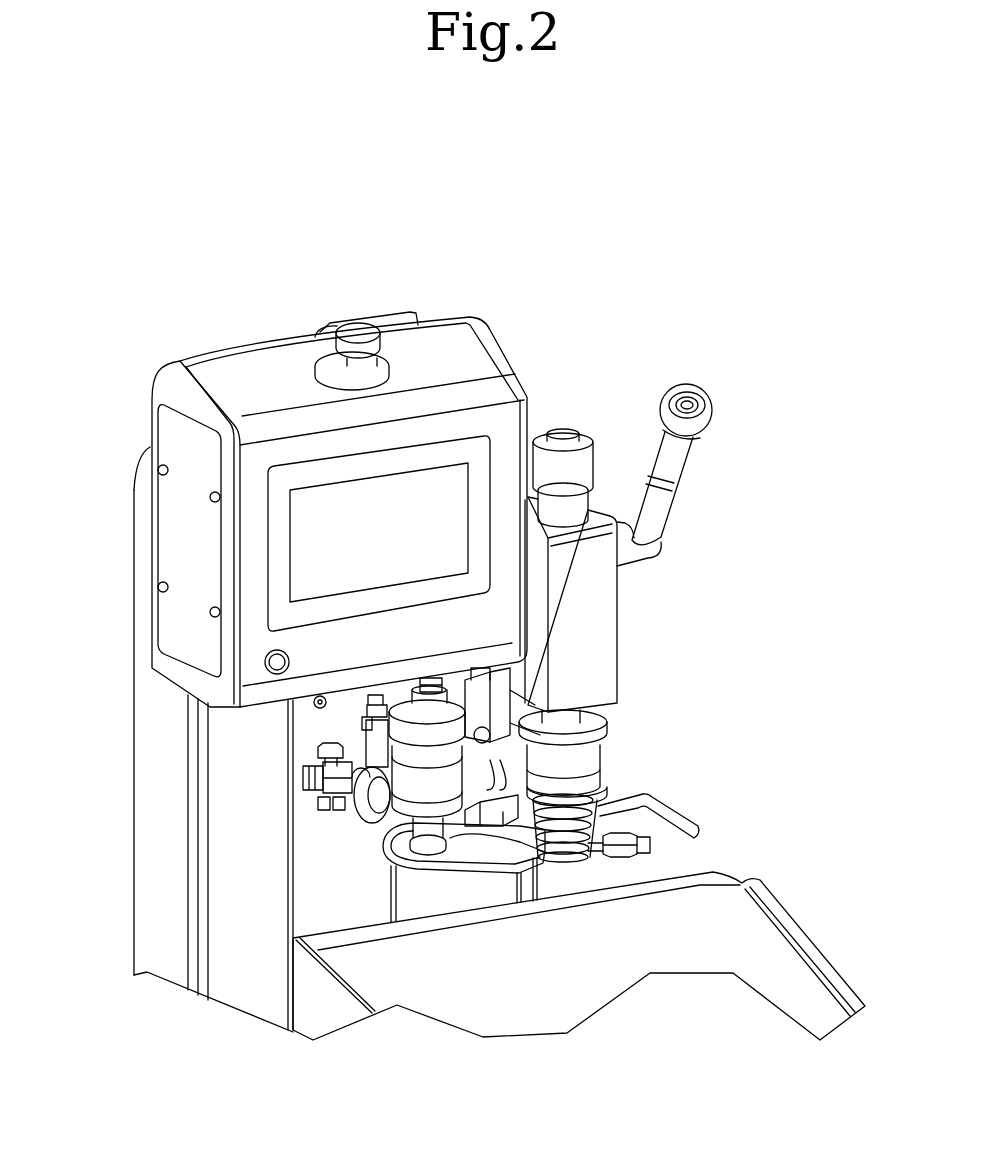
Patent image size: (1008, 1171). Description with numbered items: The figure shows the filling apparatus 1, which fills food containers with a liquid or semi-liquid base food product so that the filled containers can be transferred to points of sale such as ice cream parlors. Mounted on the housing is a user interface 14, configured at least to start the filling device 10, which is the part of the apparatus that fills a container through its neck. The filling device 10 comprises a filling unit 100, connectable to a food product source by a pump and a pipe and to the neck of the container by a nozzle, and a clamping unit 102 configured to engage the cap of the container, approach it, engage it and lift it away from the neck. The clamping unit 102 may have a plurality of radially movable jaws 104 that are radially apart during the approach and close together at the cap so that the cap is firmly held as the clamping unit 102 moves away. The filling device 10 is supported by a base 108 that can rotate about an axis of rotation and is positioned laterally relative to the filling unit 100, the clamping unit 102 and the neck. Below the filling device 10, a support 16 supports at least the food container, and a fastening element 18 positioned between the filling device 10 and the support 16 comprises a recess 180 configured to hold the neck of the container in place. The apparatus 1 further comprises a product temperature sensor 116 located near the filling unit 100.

The filling apparatus 1 is at (460, 660).
The filling device 10 is at (668, 720).
The user interface 14 is at (432, 493).
The support 16 is at (747, 867).
The fastening element 18 is at (423, 877).
The filling unit 100 is at (420, 773).
The clamping unit 102 is at (572, 798).
The jaws 104 is at (519, 880).
The base 108 is at (448, 892).
The product temperature sensor 116 is at (333, 820).
The recess 180 is at (597, 867).